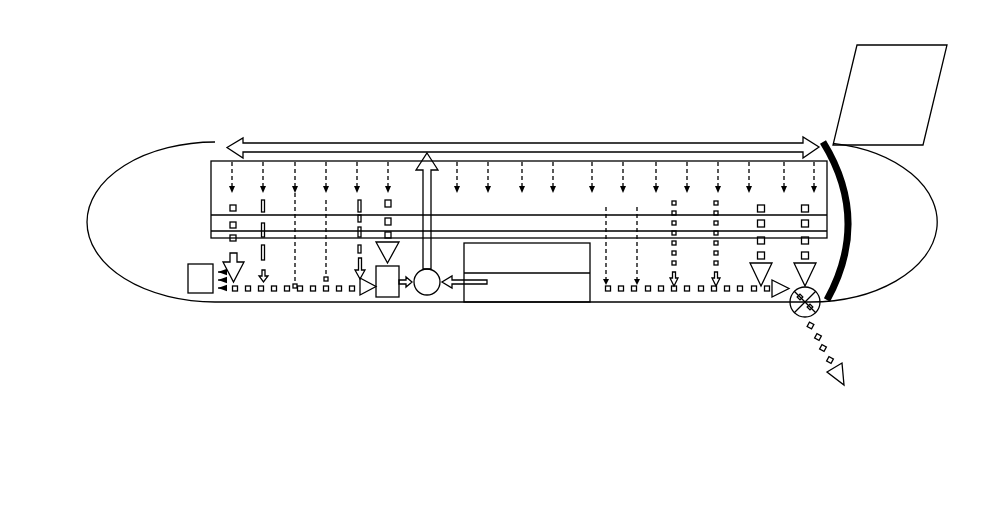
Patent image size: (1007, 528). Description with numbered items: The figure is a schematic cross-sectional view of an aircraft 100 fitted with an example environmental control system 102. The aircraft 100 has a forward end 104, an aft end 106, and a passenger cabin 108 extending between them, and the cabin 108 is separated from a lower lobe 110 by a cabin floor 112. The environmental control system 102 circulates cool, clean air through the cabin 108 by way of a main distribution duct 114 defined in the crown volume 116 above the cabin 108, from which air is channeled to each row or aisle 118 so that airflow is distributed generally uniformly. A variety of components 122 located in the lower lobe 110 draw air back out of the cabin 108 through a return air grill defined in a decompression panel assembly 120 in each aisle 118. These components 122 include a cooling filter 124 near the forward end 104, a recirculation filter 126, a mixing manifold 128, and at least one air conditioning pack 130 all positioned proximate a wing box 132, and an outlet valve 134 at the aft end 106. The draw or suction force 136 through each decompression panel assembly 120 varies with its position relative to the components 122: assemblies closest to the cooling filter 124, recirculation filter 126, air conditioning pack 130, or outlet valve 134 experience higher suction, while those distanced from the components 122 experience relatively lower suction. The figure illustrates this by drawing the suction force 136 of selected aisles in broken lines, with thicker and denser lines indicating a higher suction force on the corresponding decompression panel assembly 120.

The aircraft 100 is at (126, 65).
The environmental control system 102 is at (209, 89).
The forward end 104 is at (96, 144).
The aft end 106 is at (812, 122).
The passenger cabin 108 is at (210, 186).
The lower lobe 110 is at (162, 278).
The cabin floor 112 is at (836, 245).
The main distribution duct 114 is at (412, 147).
The crown volume 116 is at (209, 151).
The aisle 118 is at (718, 172).
The decompression panel assembly 120 is at (210, 224).
The components 122 is at (778, 325).
The cooling filter 124 is at (180, 294).
The recirculation filter 126 is at (385, 297).
The mixing manifold 128 is at (427, 296).
The air conditioning pack 130 is at (520, 290).
The wing box 132 is at (572, 263).
The outlet valve 134 is at (822, 306).
The suction force 136 is at (755, 251).